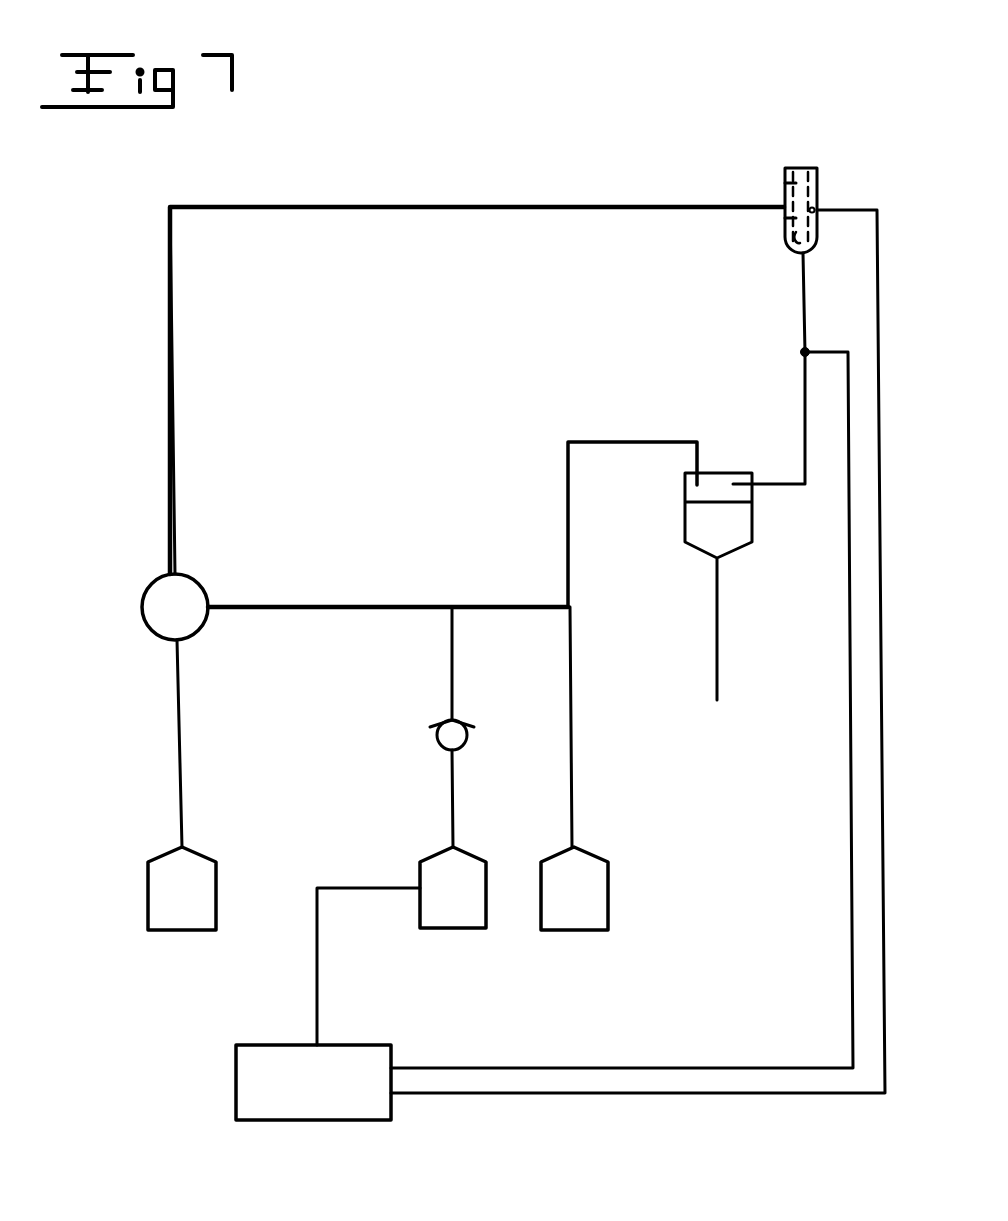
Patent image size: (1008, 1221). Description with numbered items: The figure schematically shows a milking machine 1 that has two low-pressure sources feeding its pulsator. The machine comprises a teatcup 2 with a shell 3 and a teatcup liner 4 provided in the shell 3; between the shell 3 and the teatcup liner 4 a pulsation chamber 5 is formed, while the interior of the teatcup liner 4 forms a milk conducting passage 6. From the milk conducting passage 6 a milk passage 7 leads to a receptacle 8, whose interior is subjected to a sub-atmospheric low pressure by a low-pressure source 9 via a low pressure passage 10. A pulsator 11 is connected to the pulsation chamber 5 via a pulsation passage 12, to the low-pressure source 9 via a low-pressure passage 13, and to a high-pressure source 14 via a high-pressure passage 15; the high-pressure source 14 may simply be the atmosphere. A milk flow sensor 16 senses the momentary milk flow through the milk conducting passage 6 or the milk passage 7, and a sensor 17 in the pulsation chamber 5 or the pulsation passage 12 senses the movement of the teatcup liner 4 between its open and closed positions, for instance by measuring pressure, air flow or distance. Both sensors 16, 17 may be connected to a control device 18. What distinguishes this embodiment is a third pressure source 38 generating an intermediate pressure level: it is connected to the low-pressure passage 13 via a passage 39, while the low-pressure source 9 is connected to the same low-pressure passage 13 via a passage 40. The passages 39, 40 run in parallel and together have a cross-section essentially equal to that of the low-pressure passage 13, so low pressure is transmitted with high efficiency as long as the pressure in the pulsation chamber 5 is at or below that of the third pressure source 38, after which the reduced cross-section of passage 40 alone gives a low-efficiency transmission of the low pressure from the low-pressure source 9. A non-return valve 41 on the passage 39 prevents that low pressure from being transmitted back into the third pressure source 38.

The milking machine 1 is at (502, 174).
The teatcup 2 is at (803, 168).
The shell 3 is at (816, 180).
The teatcup liner 4 is at (792, 218).
The pulsation chamber 5 is at (792, 183).
The milk conducting passage 6 is at (797, 237).
The milk passage 7 is at (803, 412).
The receptacle 8 is at (728, 528).
The low-pressure source 9 is at (590, 887).
The low pressure passage 10 is at (570, 545).
The pulsator 11 is at (185, 600).
The pulsation passage 12 is at (538, 206).
The low-pressure passage 13 is at (488, 606).
The high-pressure source 14 is at (163, 900).
The high-pressure passage 15 is at (179, 742).
The milk flow sensor 16 is at (803, 352).
The sensor 17 is at (817, 210).
The control device 18 is at (372, 1110).
The third pressure source 38 is at (421, 918).
The passage 39 is at (453, 644).
The passage 40 is at (572, 718).
The non-return valve 41 is at (455, 742).